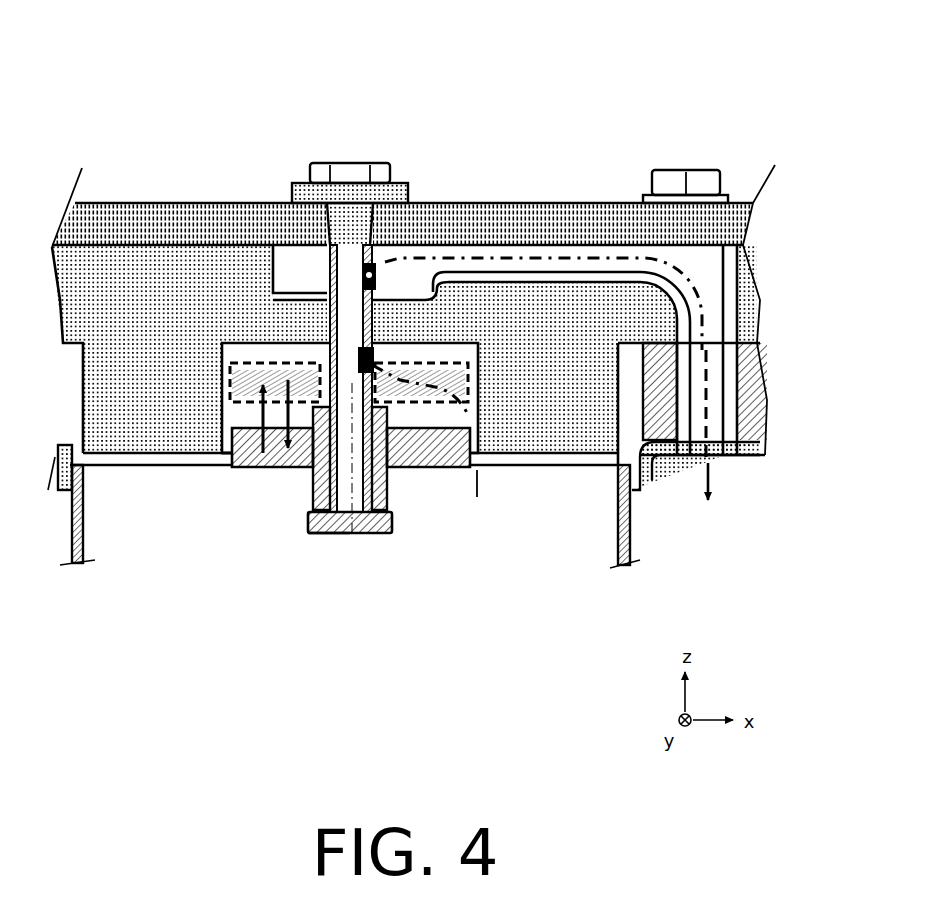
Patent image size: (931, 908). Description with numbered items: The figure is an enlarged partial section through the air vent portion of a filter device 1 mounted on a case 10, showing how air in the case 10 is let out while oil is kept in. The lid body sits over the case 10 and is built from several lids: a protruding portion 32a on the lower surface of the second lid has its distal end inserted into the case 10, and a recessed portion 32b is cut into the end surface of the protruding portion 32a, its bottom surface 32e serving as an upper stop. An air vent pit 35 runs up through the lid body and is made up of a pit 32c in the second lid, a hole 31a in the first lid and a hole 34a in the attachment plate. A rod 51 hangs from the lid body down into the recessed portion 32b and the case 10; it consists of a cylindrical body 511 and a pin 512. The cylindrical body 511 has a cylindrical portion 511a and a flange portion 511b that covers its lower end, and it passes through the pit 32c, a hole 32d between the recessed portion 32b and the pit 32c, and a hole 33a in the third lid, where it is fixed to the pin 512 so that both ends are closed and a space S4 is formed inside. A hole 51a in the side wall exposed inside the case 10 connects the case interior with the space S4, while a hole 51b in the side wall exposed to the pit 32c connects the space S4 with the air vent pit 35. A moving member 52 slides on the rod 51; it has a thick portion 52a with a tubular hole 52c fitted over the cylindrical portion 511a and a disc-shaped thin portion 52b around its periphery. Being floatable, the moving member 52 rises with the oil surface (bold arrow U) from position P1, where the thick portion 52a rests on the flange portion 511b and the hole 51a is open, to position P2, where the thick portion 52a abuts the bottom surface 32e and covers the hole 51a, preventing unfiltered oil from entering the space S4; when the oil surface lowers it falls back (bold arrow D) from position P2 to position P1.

The battery device 1 is at (738, 45).
The case 10 is at (344, 519).
The hole 31a is at (664, 289).
The protruding portion 32a is at (189, 274).
The recessed portion 32b is at (313, 295).
The pit 32c is at (569, 289).
The hole 32d is at (275, 212).
The bottom surface 32e is at (308, 236).
The hole 33a is at (506, 165).
The hole 34a is at (717, 289).
The air vent pit 35 is at (580, 128).
The rod 51 is at (338, 139).
The cylindrical body 511 is at (361, 351).
The cylindrical portion 511a is at (277, 492).
The flange portion 511b is at (302, 569).
The pin 512 is at (359, 118).
The hole 51a is at (428, 260).
The hole 51b is at (420, 195).
The moving member 52 is at (404, 515).
The thick portion 52a is at (425, 486).
The thin portion 52b is at (460, 494).
The tubular hole 52c is at (406, 561).
The space S4 is at (540, 271).
The bold arrow U is at (210, 514).
The bold arrow D is at (334, 503).
The position P1 is at (189, 498).
The position P2 is at (171, 480).